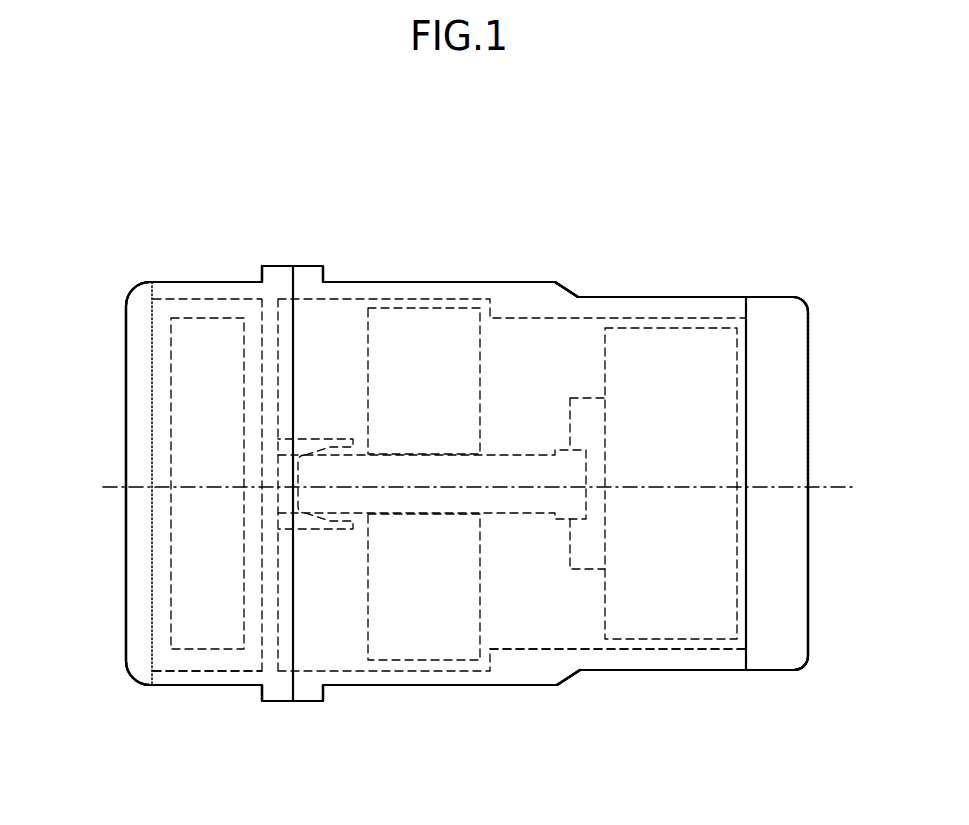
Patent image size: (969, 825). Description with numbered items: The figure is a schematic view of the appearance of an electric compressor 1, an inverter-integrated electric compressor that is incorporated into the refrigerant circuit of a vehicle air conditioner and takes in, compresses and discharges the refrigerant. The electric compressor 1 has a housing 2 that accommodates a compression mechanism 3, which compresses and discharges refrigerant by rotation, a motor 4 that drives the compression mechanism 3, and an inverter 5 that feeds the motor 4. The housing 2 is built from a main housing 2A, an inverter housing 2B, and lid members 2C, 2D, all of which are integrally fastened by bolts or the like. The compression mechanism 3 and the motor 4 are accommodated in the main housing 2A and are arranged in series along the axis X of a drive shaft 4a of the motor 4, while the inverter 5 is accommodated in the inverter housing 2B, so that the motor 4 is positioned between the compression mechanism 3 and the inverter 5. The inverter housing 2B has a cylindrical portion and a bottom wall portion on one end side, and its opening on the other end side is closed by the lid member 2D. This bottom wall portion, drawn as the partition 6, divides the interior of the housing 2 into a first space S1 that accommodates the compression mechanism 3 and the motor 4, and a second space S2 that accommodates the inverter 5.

The electric compressor 1 is at (90, 203).
The housing 2 is at (377, 282).
The main housing 2A is at (418, 687).
The inverter housing 2B is at (240, 687).
The lid member 2C is at (773, 672).
The lid member 2D is at (136, 684).
The compression mechanism 3 is at (676, 328).
The motor 4 is at (425, 308).
The drive shaft 4a is at (505, 452).
The inverter 5 is at (208, 308).
The partition wall 6 is at (278, 583).
The first space S1 is at (520, 608).
The second space S2 is at (197, 660).
The axis X is at (833, 486).